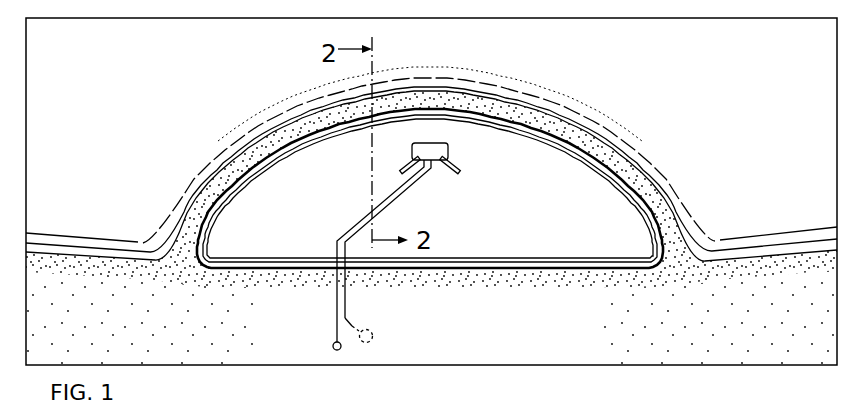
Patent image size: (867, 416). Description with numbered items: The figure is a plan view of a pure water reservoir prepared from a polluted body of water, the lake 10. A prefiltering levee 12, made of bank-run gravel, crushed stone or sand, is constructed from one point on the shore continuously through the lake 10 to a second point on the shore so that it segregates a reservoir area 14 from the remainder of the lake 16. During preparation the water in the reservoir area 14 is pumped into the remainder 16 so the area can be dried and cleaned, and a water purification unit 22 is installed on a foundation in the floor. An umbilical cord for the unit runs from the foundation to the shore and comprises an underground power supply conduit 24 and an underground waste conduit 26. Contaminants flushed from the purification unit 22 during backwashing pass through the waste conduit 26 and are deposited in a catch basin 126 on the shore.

The lake 10 is at (808, 51).
The prefiltering levee 12 is at (635, 185).
The reservoir area 14 is at (595, 236).
The remainder of the lake 16 is at (647, 123).
The water purification unit 22 is at (430, 147).
The underground power supply conduit 24 is at (332, 337).
The underground waste conduit 26 is at (352, 322).
The catch basin 126 is at (377, 338).